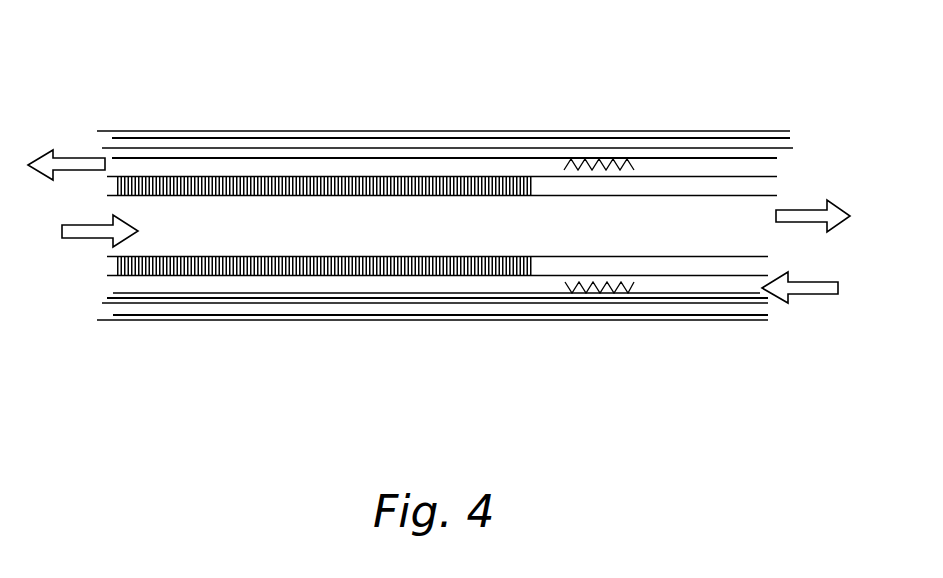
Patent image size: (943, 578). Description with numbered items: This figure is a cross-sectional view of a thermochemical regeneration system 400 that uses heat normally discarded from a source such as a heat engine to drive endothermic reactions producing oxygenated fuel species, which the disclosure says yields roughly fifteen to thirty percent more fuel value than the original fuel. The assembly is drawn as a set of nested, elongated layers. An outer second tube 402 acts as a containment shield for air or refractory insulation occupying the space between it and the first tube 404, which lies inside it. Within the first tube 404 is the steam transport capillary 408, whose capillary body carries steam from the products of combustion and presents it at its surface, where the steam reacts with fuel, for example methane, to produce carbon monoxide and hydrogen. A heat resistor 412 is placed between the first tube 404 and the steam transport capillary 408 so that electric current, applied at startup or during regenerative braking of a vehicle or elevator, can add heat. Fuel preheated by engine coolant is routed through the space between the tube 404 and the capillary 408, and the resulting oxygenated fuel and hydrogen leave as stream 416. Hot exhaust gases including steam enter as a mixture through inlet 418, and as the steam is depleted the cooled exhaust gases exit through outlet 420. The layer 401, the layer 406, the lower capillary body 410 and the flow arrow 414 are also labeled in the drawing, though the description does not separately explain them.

The layered assembly 400 is at (219, 68).
The substrate layer 401 is at (777, 159).
The second tube 402 is at (423, 130).
The first tube 404 is at (545, 147).
The inner layer 406 is at (358, 168).
The steam transport capillary 408 is at (180, 176).
The lower hatched electrode region 410 is at (227, 235).
The heat resistor 412 is at (623, 294).
The direction arrow 414 is at (810, 294).
The stream 416 is at (52, 150).
The inlet 418 is at (77, 238).
The outlet 420 is at (845, 208).